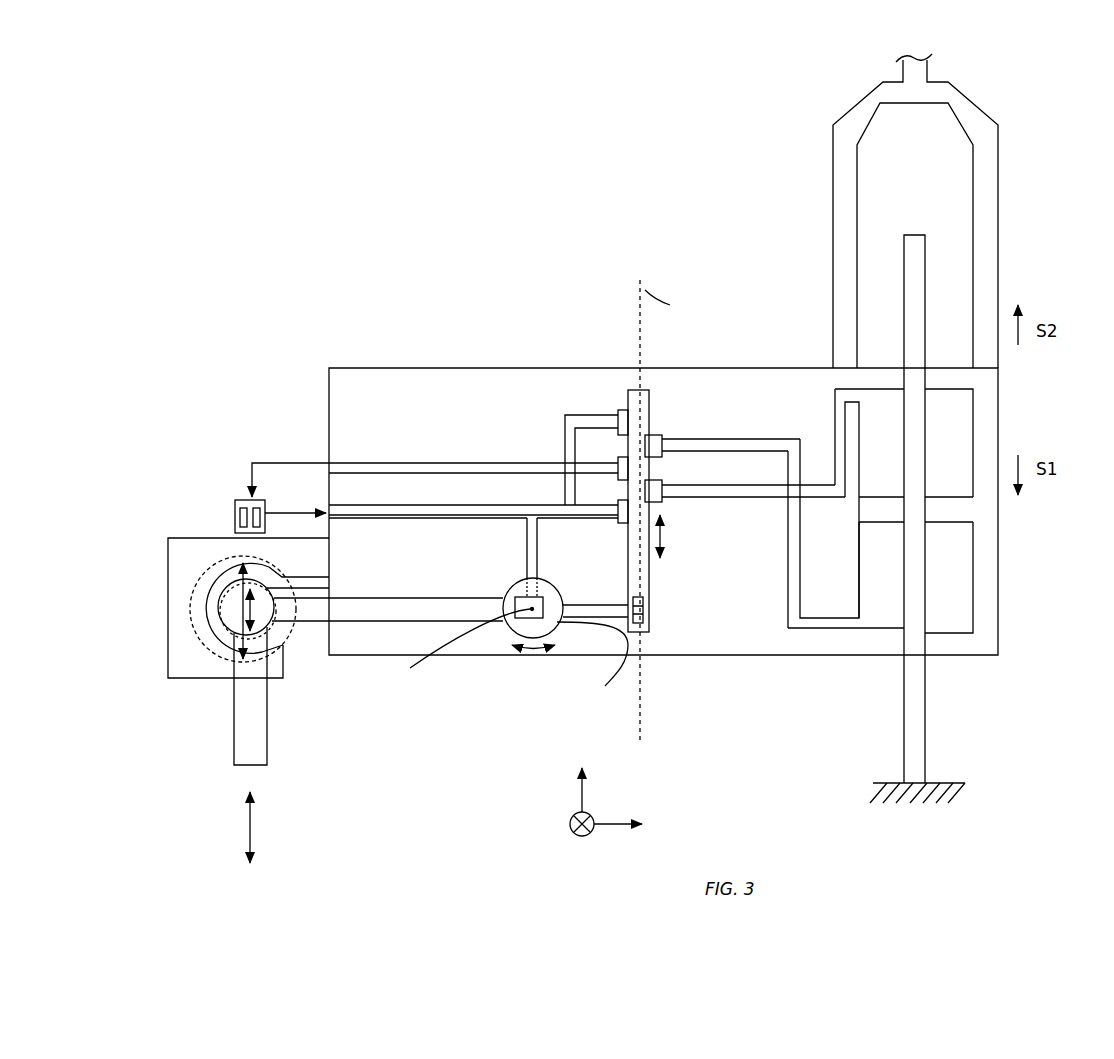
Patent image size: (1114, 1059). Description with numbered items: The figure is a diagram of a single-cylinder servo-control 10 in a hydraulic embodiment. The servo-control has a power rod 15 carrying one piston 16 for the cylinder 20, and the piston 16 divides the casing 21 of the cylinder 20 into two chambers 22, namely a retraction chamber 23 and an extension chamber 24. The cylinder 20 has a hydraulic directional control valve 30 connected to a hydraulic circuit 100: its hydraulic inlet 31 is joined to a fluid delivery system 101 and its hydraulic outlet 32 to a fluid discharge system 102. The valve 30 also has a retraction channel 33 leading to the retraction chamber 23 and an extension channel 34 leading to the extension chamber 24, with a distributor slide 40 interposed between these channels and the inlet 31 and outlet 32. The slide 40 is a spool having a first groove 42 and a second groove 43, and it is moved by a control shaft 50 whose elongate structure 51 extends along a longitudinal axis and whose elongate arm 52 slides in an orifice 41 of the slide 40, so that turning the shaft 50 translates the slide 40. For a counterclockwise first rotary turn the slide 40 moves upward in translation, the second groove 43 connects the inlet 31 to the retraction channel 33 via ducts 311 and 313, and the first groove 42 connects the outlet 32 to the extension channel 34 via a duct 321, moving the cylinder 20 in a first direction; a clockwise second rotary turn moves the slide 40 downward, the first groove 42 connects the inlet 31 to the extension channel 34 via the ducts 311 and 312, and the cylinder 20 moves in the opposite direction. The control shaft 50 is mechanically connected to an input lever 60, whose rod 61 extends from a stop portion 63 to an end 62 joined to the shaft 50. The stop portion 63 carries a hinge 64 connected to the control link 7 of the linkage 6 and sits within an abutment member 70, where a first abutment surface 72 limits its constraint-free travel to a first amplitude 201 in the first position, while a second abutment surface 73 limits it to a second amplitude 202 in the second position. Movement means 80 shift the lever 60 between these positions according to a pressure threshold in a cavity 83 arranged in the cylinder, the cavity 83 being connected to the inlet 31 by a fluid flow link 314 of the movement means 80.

The robot 10 is at (340, 182).
The cylinder 20 is at (521, 245).
The casing 21 is at (1000, 183).
The power rod 15 is at (928, 724).
The piston 16 is at (975, 504).
The chamber 22 is at (936, 511).
The retraction chamber 23 is at (968, 585).
The extension chamber 24 is at (968, 421).
The hydraulic directional control valve 30 is at (406, 574).
The hydraulic inlet 31 is at (473, 502).
The hydraulic outlet 32 is at (473, 451).
The retraction channel 33 is at (805, 530).
The extension channel 34 is at (730, 497).
The distributor slide 40 is at (653, 590).
The orifice 41 is at (648, 622).
The first groove 42 is at (658, 488).
The second groove 43 is at (658, 443).
The control shaft 50 is at (527, 596).
The elongate structure 51 is at (545, 580).
The elongate arm 52 is at (645, 608).
The input lever 60 is at (387, 611).
The rod 61 is at (422, 627).
The end 62 is at (500, 600).
The stop portion 63 is at (331, 584).
The hinge 64 is at (218, 602).
The abutment member 70 is at (228, 628).
The first abutment surface 72 is at (227, 658).
The clamp 73 is at (203, 620).
The movement means 80 is at (568, 590).
The cavity 83 is at (592, 659).
The hydraulic circuit 100 is at (190, 512).
The fluid delivery system 101 is at (266, 505).
The fluid discharge system 102 is at (237, 503).
The first amplitude 201 is at (277, 627).
The second amplitude 202 is at (222, 580).
The duct 311 is at (430, 521).
The duct 312 is at (562, 522).
The duct 313 is at (560, 428).
The fluid flow link 314 is at (524, 547).
The duct 321 is at (437, 458).
The linkage 6 is at (216, 703).
The control link 7 is at (234, 752).